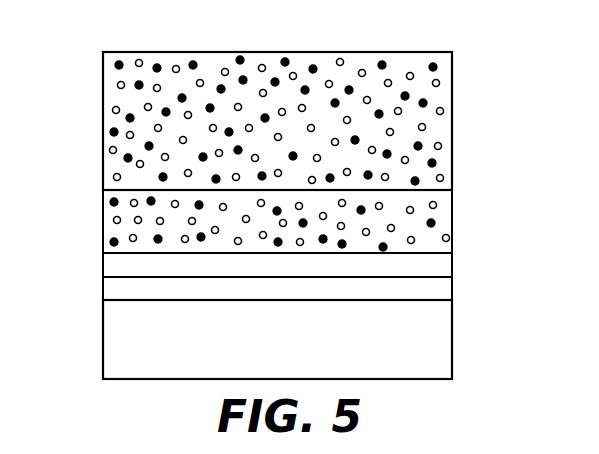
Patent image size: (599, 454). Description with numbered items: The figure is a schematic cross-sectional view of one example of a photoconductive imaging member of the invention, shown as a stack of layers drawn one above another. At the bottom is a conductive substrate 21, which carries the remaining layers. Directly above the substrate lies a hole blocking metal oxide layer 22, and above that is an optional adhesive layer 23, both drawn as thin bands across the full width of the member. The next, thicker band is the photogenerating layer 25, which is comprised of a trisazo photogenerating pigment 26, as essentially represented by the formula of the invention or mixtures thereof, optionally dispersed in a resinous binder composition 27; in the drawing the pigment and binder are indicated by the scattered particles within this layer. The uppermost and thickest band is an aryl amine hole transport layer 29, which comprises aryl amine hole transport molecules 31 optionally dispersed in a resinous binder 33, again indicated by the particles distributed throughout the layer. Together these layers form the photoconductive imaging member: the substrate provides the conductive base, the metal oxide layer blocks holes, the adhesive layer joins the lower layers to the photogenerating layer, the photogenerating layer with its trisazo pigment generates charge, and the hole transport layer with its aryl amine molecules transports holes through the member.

The conductive substrate 21 is at (452, 328).
The hole blocking metal oxide layer 22 is at (103, 281).
The optional adhesive layer 23 is at (452, 263).
The photogenerating layer 25 is at (452, 228).
The trisazo photogenerating pigment 26 is at (114, 219).
The resinous binder composition 27 is at (435, 223).
The aryl amine hole transport layer 29 is at (452, 110).
The aryl amine hole transport molecules 31 is at (118, 85).
The resinous binder 33 is at (382, 65).